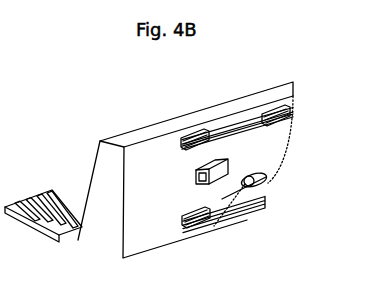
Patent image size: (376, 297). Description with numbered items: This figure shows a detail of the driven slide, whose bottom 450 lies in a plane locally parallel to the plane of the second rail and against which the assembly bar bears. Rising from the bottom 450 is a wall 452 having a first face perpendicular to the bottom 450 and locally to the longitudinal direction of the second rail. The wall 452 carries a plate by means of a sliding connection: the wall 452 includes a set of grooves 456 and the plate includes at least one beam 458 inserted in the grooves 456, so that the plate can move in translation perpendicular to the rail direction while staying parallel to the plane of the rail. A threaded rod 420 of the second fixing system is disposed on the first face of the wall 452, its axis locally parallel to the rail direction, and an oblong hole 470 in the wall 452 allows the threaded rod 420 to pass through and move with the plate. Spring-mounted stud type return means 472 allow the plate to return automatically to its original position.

The bottom 450 is at (232, 232).
The wall 452 is at (133, 158).
The grooves 456 is at (188, 133).
The beam 458 is at (233, 128).
The oblong hole 470 is at (250, 188).
The threaded rod 420 is at (256, 187).
The spring-mounted stud type return means 472 is at (195, 174).